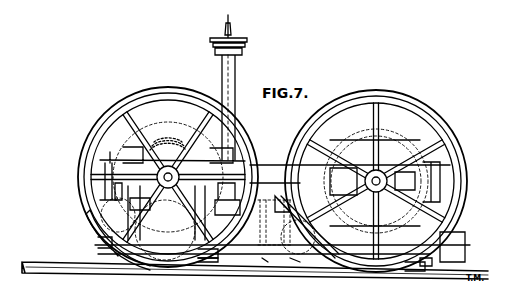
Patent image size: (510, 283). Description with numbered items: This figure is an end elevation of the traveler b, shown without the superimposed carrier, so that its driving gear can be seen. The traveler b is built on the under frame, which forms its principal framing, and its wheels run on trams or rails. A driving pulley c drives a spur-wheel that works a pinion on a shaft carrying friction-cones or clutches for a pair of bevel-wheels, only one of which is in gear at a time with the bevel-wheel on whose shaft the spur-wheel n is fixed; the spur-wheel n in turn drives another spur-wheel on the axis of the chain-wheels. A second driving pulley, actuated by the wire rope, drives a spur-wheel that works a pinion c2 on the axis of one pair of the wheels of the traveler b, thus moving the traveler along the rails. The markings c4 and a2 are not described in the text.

The driving wheel c4 is at (180, 88).
The pinion c2 is at (168, 139).
The frame bar a2 is at (282, 203).
The spur-wheel n is at (319, 226).
The pulley c is at (376, 181).
The traveler b is at (426, 264).